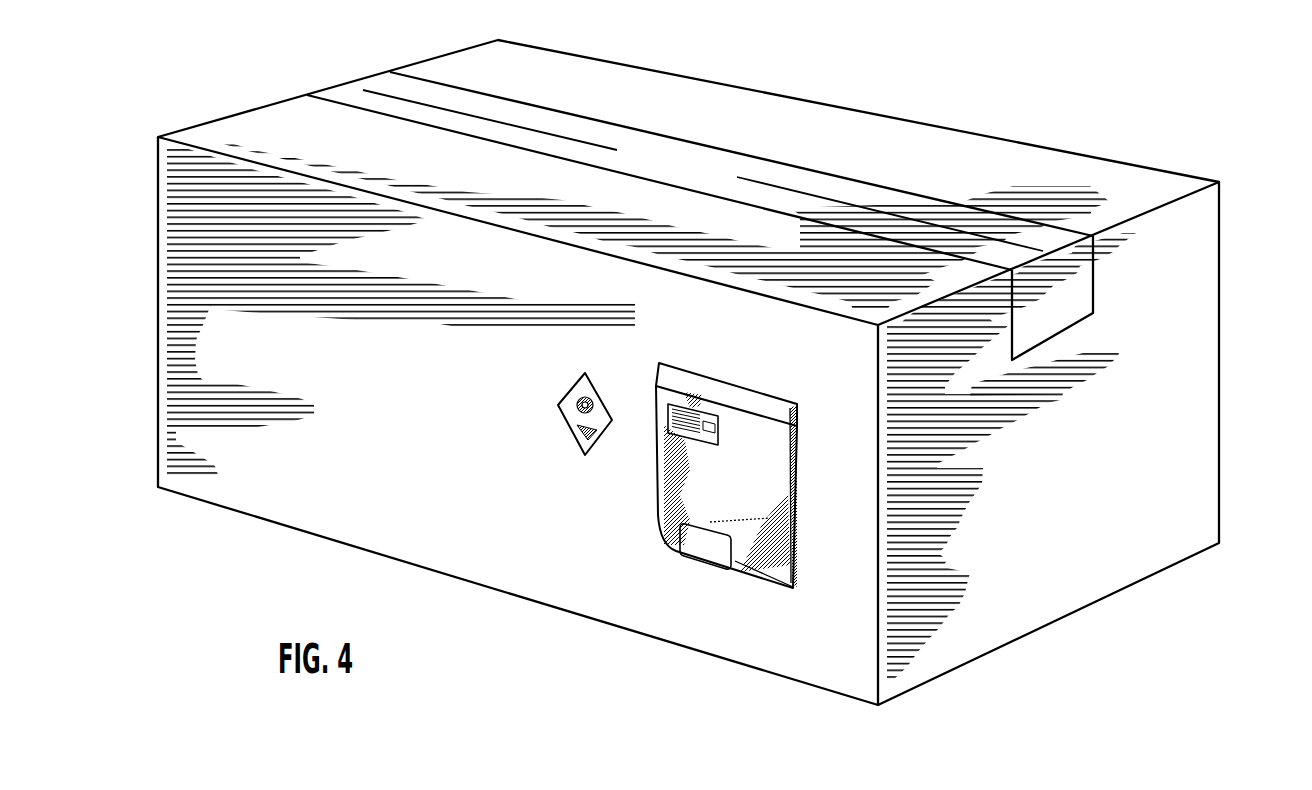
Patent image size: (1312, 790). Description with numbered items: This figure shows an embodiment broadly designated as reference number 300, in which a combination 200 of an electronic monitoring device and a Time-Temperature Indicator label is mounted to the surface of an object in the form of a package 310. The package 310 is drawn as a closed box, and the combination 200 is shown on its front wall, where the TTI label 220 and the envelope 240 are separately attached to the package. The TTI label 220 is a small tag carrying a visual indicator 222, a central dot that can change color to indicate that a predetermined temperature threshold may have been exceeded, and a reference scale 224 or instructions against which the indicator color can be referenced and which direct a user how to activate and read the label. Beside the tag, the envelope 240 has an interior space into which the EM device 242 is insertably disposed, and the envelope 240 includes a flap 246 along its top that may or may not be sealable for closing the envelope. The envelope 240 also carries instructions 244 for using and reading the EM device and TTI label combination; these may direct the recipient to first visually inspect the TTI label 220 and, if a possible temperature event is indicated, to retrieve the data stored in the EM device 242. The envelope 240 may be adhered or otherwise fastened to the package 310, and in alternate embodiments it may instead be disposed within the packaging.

The combination of EM device and TTI label 200 is at (652, 465).
The TTI label 220 is at (566, 408).
The visual indicator 222 is at (599, 390).
The reference scale 224 is at (585, 440).
The envelope 240 is at (743, 465).
The EM device 242 is at (705, 557).
The instructions 244 is at (724, 432).
The flap 246 is at (705, 388).
The embodiment with package-mounted combination 300 is at (685, 372).
The package 310 is at (1197, 279).